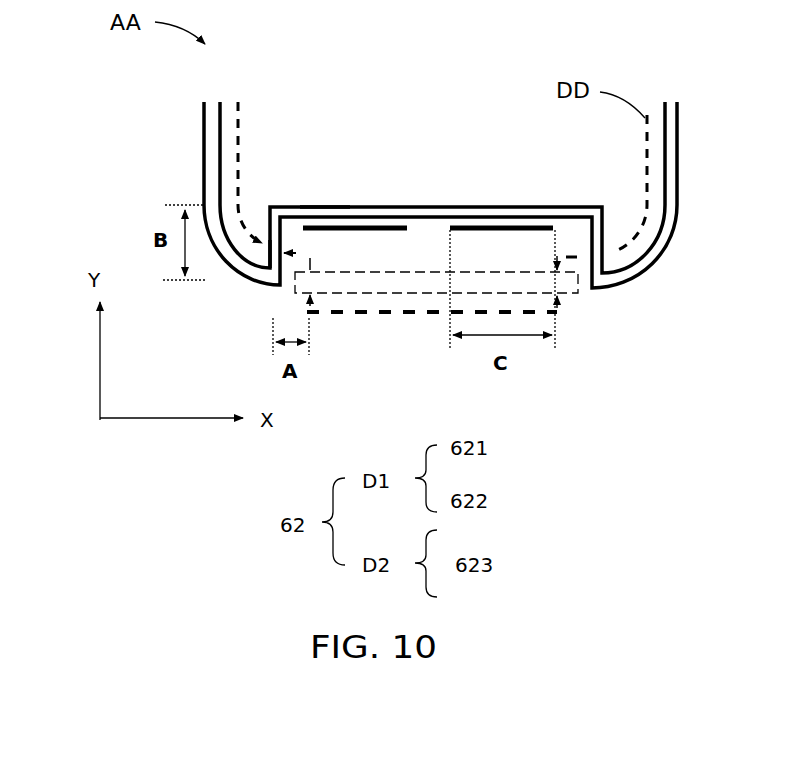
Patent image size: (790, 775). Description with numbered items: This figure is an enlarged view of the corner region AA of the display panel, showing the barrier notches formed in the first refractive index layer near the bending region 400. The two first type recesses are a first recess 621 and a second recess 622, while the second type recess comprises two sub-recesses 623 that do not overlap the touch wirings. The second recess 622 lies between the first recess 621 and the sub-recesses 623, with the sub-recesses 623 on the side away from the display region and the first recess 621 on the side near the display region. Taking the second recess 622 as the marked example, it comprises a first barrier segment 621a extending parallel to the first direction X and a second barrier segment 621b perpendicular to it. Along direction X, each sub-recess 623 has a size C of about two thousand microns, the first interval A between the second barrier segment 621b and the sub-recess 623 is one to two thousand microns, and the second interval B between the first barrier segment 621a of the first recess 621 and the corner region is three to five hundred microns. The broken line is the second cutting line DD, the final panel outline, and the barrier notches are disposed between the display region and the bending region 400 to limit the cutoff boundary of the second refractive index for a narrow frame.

The first recess 621 is at (220, 116).
The second recess 622 is at (204, 160).
The sub-recess 623 is at (393, 226).
The first barrier segment 621a is at (325, 213).
The second barrier segment 621b is at (273, 245).
The bending region 400 is at (391, 300).